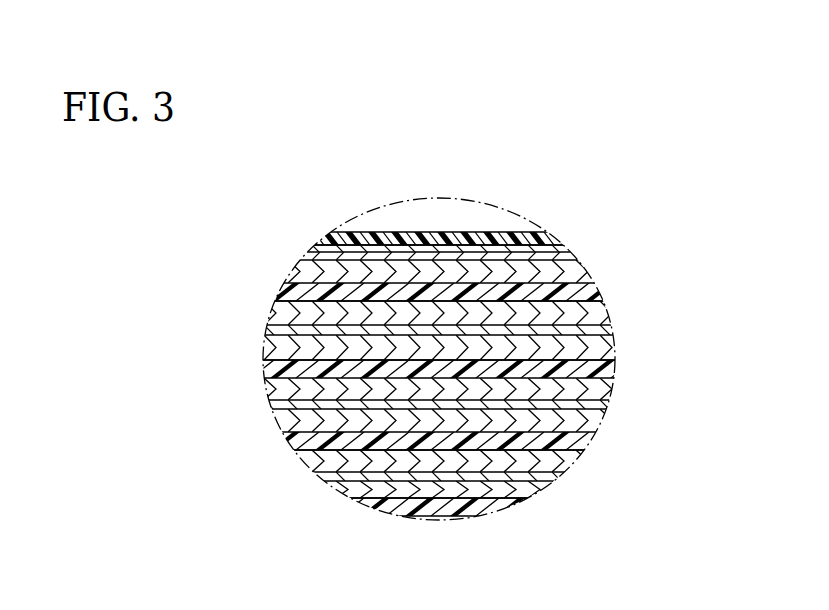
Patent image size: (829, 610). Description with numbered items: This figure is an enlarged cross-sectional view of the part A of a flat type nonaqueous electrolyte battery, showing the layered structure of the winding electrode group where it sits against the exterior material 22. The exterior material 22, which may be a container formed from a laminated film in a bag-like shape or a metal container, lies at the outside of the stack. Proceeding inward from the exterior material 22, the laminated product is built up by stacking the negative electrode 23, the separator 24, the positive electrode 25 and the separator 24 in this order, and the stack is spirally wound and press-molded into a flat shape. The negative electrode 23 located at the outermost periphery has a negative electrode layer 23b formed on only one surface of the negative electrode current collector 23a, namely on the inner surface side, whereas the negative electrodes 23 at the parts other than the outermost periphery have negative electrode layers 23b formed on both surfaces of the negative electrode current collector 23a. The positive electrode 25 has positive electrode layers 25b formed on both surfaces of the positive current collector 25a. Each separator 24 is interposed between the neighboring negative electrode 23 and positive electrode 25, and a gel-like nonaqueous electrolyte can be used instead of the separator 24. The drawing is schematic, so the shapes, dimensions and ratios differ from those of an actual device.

The part A is at (382, 211).
The exterior material 22 is at (553, 237).
The negative electrode 23 is at (679, 218).
The negative electrode current collector 23a is at (566, 256).
The negative electrode layer 23b is at (573, 269).
The separator 24 is at (283, 292).
The positive electrode 25 is at (696, 285).
The positive current collector 25a is at (602, 331).
The positive electrode layer 25b is at (602, 312).